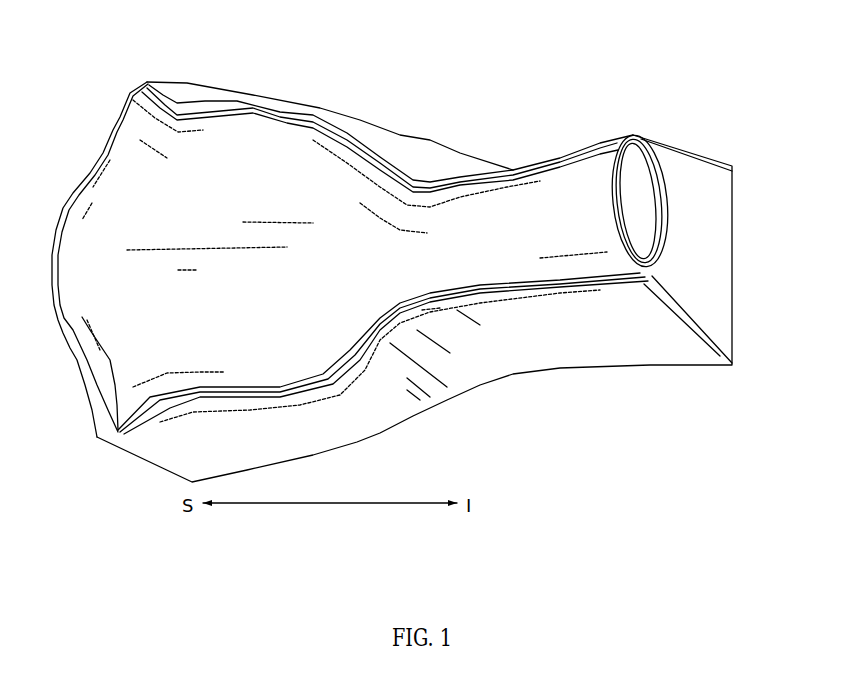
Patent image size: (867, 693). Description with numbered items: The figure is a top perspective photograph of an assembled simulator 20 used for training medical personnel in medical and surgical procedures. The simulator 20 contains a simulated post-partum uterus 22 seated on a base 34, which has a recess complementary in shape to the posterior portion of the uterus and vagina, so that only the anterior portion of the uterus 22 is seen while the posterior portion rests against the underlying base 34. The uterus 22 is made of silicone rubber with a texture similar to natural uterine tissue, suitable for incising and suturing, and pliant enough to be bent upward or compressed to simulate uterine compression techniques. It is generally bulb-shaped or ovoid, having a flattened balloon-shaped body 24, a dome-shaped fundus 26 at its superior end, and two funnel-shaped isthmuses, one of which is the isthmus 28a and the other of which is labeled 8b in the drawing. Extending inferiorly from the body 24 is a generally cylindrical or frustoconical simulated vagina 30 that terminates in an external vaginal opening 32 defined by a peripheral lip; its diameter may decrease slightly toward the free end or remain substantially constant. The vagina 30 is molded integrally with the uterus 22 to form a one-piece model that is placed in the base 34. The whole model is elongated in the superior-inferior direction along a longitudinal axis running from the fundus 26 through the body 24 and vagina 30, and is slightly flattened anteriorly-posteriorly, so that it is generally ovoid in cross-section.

The assembled simulator 20 is at (411, 252).
The simulated post-partum uterus 22 is at (104, 125).
The body 24 is at (330, 258).
The fundus 26 is at (86, 338).
The isthmus 28a is at (148, 82).
The second folded edge 8b is at (110, 432).
The simulated vagina 30 is at (672, 172).
The external vaginal opening 32 is at (645, 200).
The base 34 is at (722, 320).